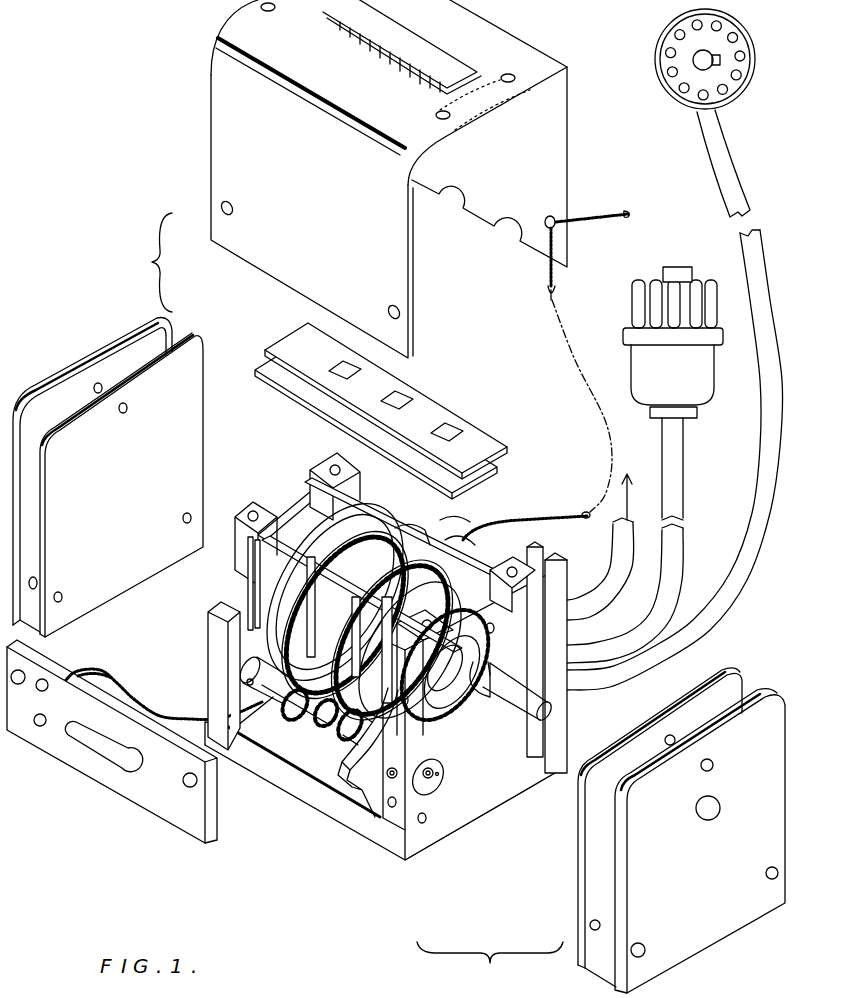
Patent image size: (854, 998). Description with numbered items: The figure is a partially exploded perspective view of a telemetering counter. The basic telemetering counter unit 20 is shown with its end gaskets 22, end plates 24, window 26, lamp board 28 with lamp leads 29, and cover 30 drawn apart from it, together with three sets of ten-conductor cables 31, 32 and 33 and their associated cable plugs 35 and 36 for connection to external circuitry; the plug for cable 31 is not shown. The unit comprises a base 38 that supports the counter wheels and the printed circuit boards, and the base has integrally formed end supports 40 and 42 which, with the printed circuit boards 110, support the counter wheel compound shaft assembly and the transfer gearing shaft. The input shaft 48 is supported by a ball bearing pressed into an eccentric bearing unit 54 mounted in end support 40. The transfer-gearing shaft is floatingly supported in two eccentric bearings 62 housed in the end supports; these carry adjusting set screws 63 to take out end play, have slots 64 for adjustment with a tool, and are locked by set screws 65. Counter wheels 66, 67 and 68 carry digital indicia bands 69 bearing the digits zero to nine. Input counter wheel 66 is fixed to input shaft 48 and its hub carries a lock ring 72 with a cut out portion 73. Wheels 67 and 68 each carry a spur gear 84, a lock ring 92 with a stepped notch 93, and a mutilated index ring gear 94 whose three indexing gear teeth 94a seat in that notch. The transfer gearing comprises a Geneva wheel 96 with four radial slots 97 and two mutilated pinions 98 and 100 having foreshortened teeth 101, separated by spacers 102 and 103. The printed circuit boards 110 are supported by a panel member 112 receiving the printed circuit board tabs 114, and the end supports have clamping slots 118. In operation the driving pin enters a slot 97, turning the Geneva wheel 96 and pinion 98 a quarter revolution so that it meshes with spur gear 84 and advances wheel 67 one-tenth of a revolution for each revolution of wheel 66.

The telemetering counter unit 20 is at (305, 803).
The end gaskets 22 is at (198, 440).
The end plates 24 is at (107, 350).
The window 26 is at (482, 438).
The lamp board 28 is at (142, 800).
The lamp leads 29 is at (604, 210).
The cover 30 is at (216, 100).
The ten-conductor cable 31 is at (617, 582).
The ten-conductor cable 32 is at (675, 563).
The ten-conductor cable 33 is at (738, 603).
The cable plug 35 is at (708, 380).
The cable plug 36 is at (742, 92).
The base 38 is at (293, 778).
The end support 40 is at (509, 792).
The end support 42 is at (212, 623).
The input shaft 48 is at (560, 712).
The eccentric bearing unit 54 is at (480, 697).
The eccentric bearings 62 is at (252, 657).
The adjusting set screws 63 is at (433, 783).
The slots 64 is at (488, 662).
The set screws 65 is at (213, 663).
The input counter wheel 66 is at (407, 663).
The counter wheel 67 is at (457, 502).
The counter wheel 68 is at (300, 565).
The digital indicia bands 69 is at (343, 520).
The lock ring 72 is at (417, 647).
The cut out portion 73 is at (462, 538).
The spur gear 84 is at (377, 500).
The lock ring 92 is at (273, 517).
The notch 93 is at (407, 530).
The mutilated index ring gear 94 is at (280, 510).
The indexing gear teeth 94a is at (407, 502).
The Geneva wheel 96 is at (373, 800).
The radial slots 97 is at (340, 787).
The mutilated pinion 98 is at (338, 740).
The mutilated pinion 100 is at (287, 713).
The foreshortened teeth 101 is at (288, 733).
The spacer 102 is at (247, 680).
The spacer 103 is at (317, 725).
The printed circuit boards 110 is at (490, 548).
The panel member 112 is at (560, 575).
The printed circuit board tabs 114 is at (527, 493).
The clamping slots 118 is at (347, 452).